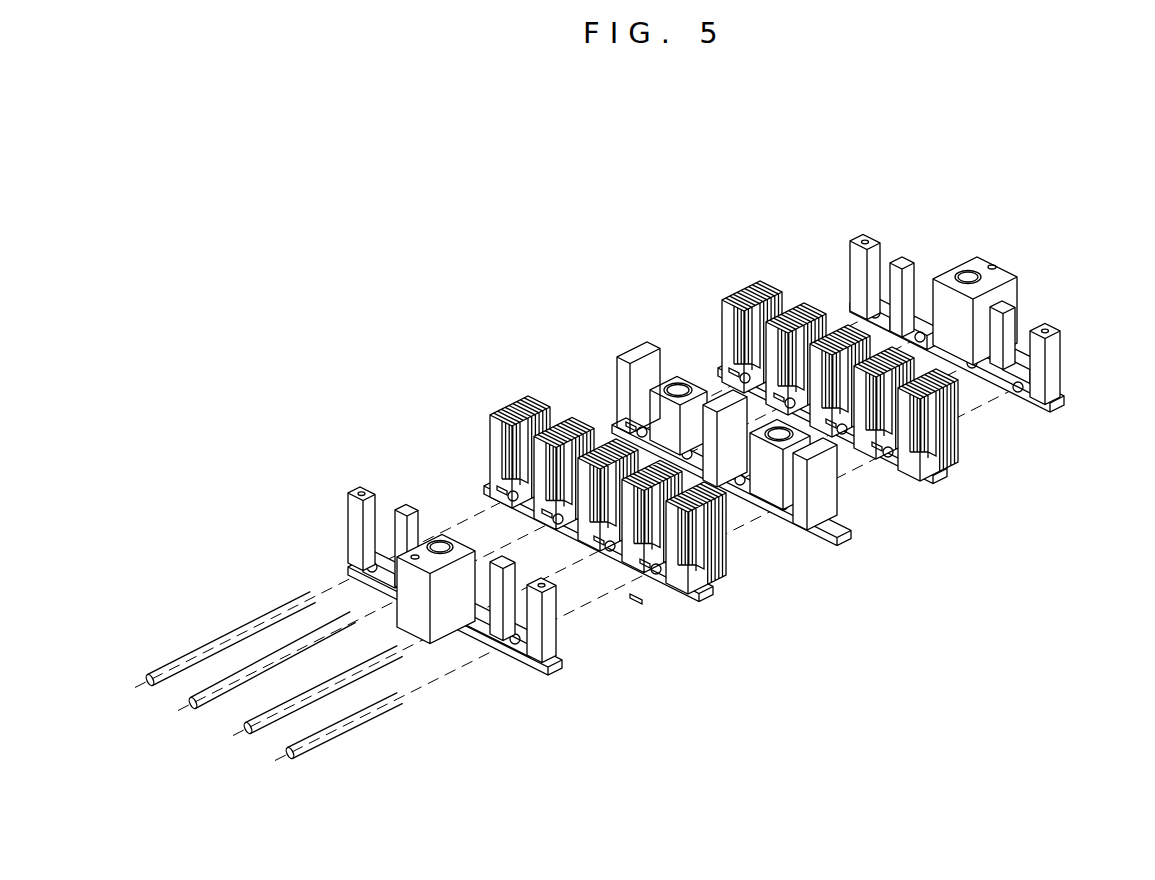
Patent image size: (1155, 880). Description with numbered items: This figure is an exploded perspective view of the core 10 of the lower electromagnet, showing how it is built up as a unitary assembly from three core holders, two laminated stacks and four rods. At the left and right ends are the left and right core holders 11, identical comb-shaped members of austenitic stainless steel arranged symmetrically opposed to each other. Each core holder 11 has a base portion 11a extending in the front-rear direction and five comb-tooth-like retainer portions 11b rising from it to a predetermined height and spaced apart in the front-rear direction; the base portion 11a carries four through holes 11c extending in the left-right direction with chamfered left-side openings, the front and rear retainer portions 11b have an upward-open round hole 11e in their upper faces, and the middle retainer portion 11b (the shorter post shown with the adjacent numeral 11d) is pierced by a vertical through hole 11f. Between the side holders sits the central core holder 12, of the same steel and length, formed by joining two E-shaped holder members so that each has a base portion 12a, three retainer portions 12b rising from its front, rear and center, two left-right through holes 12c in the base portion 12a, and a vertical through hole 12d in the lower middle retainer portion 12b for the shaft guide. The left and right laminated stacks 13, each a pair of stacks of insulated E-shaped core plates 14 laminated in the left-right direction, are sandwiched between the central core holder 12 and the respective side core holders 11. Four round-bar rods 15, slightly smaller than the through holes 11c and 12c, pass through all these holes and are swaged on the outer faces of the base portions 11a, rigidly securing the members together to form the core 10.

The core 10 is at (405, 215).
The core holder 11 is at (702, 454).
The base portion 11a is at (492, 662).
The retainer portion 11b is at (350, 513).
The through hole 11c is at (372, 567).
The short post 11d is at (402, 507).
The round hole 11e is at (362, 490).
The through hole 11f is at (445, 545).
The central core holder 12 is at (744, 427).
The base portion 12a is at (747, 493).
The retainer portion 12b is at (620, 360).
The through hole 12c is at (630, 430).
The through hole 12d is at (680, 378).
The laminated stack 13 is at (495, 400).
The core plate 14 is at (637, 605).
The rod 15 is at (190, 708).